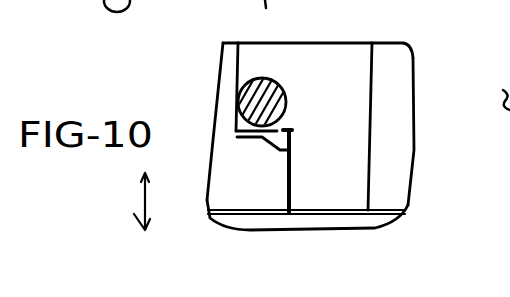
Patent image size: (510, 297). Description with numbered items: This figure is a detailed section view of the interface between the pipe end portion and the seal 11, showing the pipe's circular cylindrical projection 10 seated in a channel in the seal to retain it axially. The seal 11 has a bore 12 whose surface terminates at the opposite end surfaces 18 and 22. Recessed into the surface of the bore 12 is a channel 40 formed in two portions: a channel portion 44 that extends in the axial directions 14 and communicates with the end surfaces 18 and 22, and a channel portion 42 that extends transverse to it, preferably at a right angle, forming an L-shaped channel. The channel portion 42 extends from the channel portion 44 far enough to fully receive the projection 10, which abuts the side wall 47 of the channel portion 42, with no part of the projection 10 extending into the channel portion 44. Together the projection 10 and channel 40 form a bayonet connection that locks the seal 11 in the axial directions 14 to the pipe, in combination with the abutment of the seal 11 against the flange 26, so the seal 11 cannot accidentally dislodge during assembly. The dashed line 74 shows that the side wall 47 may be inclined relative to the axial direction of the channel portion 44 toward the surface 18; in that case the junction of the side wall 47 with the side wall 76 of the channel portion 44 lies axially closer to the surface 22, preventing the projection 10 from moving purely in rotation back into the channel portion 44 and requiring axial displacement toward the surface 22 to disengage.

The projection 10 is at (281, 94).
The seal 11 is at (437, 56).
The bore 12 is at (228, 135).
The axial directions 14 is at (143, 198).
The end surface 18 is at (308, 212).
The end surface 22 is at (323, 30).
The flange 26 is at (365, 232).
The channel 40 is at (365, 152).
The channel portion 42 is at (252, 63).
The channel portion 44 is at (323, 173).
The side wall 47 is at (285, 117).
The dashed line 74 is at (293, 150).
The side wall 76 is at (290, 190).